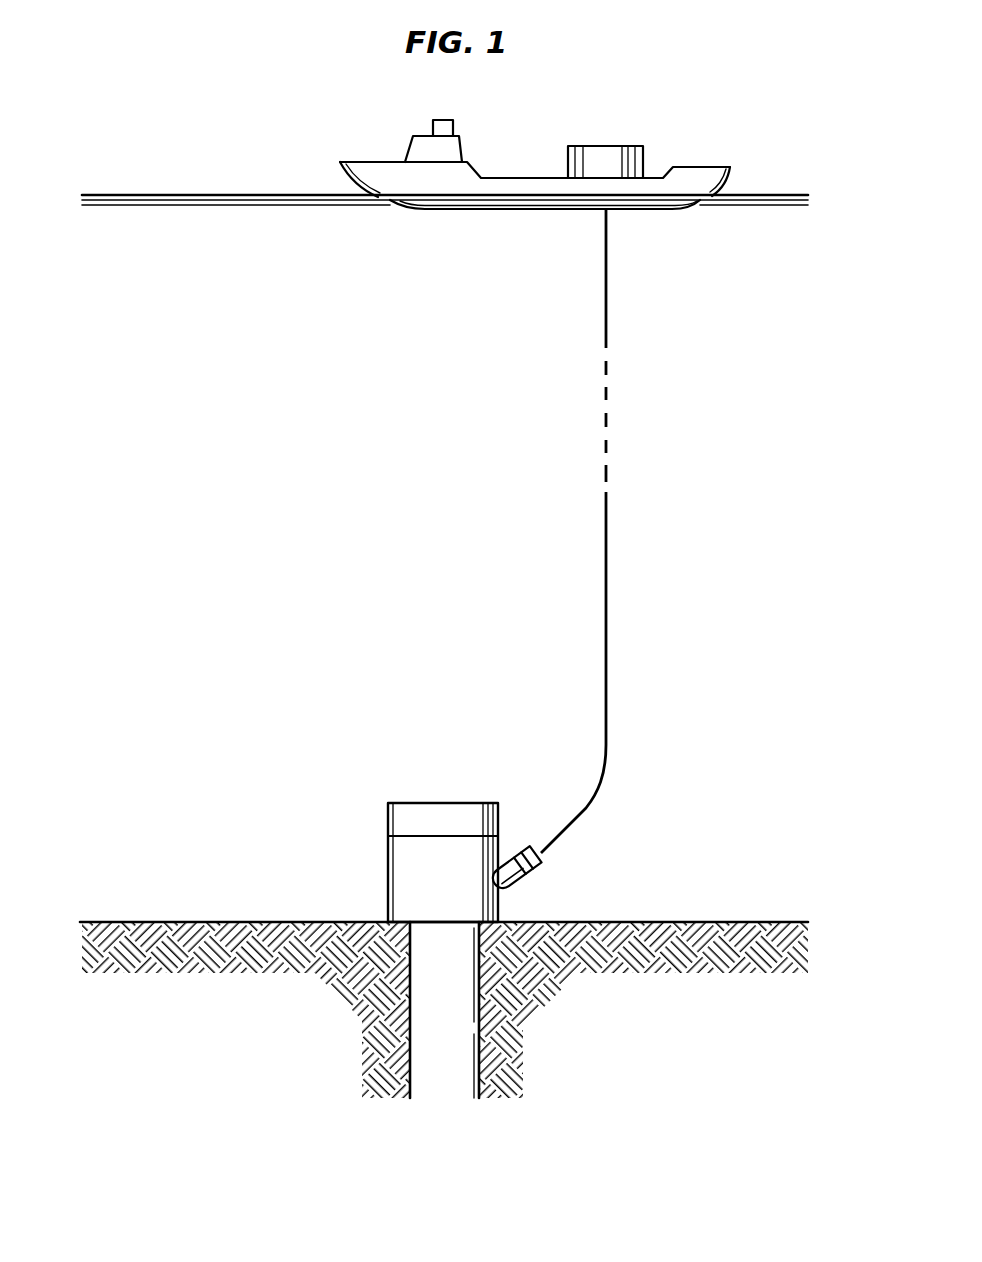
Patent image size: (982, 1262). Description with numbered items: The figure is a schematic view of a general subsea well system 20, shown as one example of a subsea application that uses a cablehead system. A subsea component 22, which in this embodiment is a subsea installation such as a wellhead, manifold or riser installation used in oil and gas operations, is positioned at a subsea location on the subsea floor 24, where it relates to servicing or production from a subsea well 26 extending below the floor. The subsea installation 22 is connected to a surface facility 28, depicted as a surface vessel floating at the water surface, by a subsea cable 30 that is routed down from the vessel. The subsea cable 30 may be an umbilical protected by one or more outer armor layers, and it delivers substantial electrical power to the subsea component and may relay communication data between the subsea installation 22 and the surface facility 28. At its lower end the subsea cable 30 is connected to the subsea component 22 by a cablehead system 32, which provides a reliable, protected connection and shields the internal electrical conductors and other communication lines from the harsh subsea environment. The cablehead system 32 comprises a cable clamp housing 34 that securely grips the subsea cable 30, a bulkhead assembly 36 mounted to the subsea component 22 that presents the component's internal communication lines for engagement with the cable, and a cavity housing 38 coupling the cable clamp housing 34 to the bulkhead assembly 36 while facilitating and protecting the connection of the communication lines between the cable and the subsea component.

The subsea well system 20 is at (710, 120).
The subsea component 22 is at (408, 802).
The subsea floor 24 is at (205, 922).
The subsea well 26 is at (466, 1072).
The surface facility 28 is at (463, 143).
The subsea cable 30 is at (608, 654).
The cablehead system 32 is at (562, 855).
The cable clamp housing 34 is at (525, 846).
The bulkhead assembly 36 is at (508, 888).
The cavity housing 38 is at (537, 883).